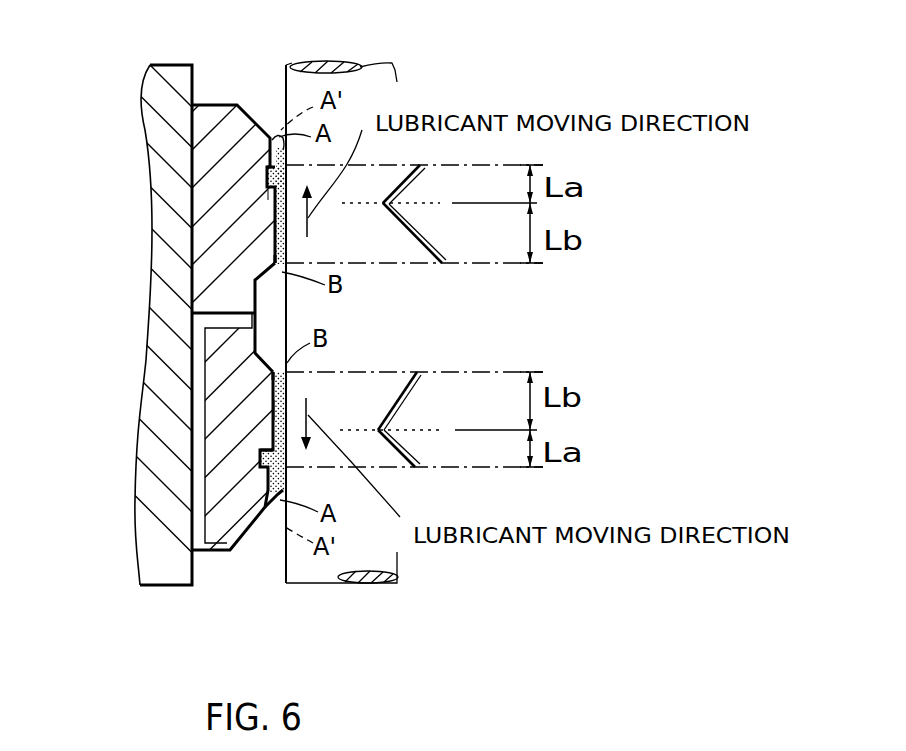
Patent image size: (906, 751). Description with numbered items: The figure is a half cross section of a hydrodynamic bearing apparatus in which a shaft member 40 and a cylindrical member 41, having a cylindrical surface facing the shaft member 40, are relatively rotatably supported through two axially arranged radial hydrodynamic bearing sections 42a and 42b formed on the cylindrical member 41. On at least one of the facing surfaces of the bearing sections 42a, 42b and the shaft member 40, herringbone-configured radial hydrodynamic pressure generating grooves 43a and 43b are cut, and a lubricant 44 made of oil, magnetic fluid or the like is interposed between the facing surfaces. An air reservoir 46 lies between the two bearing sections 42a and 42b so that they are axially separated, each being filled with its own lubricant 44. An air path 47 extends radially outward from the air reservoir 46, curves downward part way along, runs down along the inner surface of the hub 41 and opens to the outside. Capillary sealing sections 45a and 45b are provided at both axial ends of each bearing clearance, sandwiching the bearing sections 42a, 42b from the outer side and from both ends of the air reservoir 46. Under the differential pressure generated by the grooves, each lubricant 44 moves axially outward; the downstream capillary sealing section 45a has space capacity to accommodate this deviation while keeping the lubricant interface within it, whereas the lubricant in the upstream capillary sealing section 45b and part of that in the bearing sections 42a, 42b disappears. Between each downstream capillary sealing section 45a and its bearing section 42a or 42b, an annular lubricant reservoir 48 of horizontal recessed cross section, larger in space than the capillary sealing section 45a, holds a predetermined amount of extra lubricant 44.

The shaft member 40 is at (315, 573).
The cylindrical member 41 is at (169, 567).
The radial hydrodynamic bearing section 42a is at (277, 207).
The radial hydrodynamic bearing section 42b is at (263, 457).
The radial hydrodynamic pressure generating groove 43a is at (404, 182).
The radial hydrodynamic pressure generating groove 43b is at (419, 243).
The lubricant 44 is at (273, 230).
The capillary sealing section 45a is at (272, 120).
The capillary sealing section 45b is at (278, 270).
The air reservoir 46 is at (270, 318).
The air path 47 is at (217, 322).
The lubricant reservoir 48 is at (272, 165).